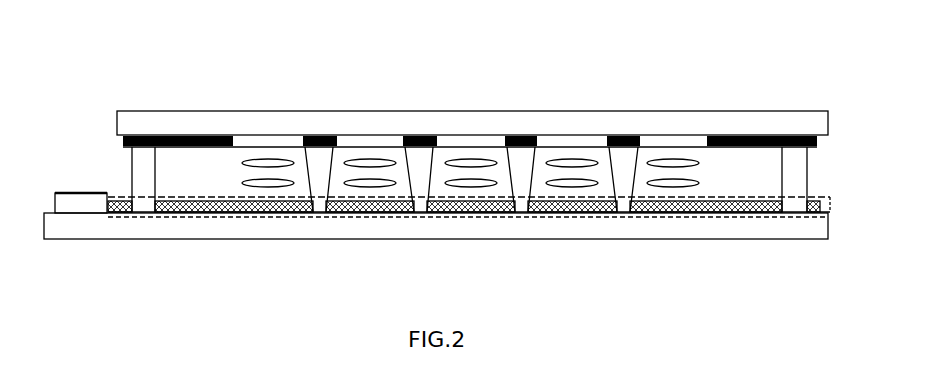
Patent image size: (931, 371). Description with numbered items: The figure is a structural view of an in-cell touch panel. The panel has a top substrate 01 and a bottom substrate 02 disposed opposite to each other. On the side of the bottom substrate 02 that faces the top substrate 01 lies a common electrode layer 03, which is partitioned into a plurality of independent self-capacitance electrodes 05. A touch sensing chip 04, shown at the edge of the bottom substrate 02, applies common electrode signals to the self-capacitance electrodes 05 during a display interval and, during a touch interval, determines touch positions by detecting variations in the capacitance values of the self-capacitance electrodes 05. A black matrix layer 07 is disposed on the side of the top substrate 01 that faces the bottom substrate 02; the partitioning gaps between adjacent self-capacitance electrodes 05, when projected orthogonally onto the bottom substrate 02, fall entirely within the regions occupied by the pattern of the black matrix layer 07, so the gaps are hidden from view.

The top substrate 01 is at (185, 118).
The black matrix layer 07 is at (415, 137).
The common electrode layer 03 is at (115, 198).
The touch sensing chip 04 is at (77, 213).
The bottom substrate 02 is at (240, 230).
The self-capacitance electrode 05 is at (700, 213).